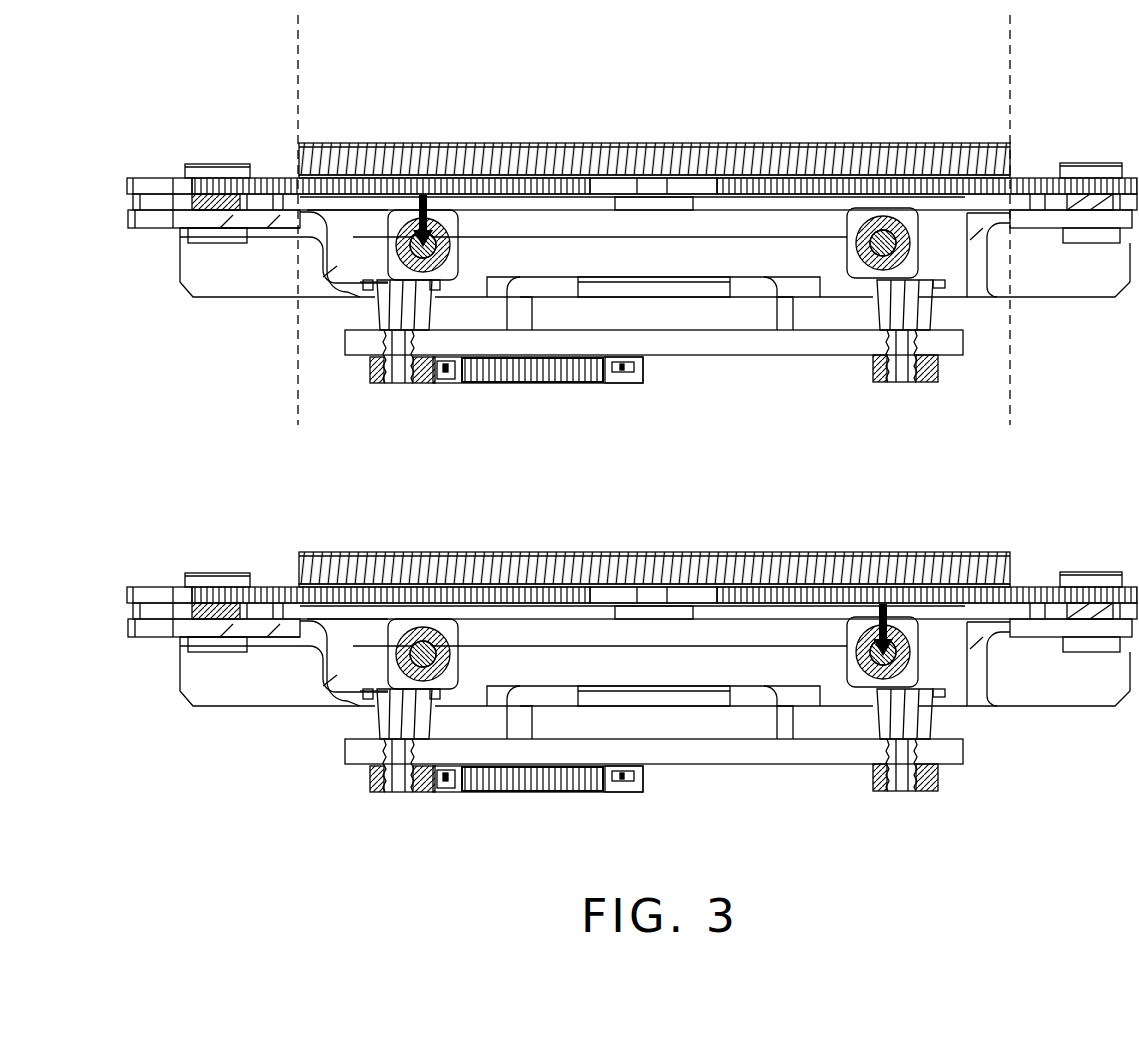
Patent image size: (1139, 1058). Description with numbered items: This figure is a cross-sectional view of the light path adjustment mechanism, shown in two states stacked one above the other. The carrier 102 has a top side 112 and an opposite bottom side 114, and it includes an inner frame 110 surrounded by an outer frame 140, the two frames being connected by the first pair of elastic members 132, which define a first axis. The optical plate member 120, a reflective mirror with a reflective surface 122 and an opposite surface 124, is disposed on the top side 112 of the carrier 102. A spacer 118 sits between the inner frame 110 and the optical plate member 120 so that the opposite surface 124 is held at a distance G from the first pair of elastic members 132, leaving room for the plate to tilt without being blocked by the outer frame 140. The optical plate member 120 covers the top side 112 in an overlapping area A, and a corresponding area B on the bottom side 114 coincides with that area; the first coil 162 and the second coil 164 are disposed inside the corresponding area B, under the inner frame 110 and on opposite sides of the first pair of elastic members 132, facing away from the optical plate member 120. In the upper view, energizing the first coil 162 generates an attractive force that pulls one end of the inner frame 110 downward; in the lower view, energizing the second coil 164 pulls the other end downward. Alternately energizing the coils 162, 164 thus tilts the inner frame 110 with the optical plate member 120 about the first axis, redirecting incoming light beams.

The carrier 102 is at (1030, 177).
The inner frame 110 is at (582, 180).
The top side 112 is at (417, 182).
The bottom side 114 is at (507, 197).
The spacer 118 is at (565, 180).
The optical plate member 120 is at (490, 152).
The reflective surface 122 is at (440, 143).
The opposite surface 124 is at (452, 177).
The first pair of elastic members 132 is at (665, 196).
The outer frame 140 is at (275, 187).
The first coil 162 is at (397, 247).
The second coil 164 is at (912, 252).
The distance G is at (297, 177).
The overlapping area A is at (1010, 45).
The corresponding area B is at (1010, 407).